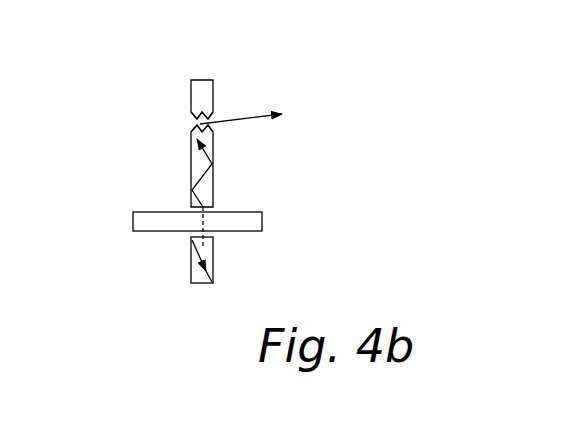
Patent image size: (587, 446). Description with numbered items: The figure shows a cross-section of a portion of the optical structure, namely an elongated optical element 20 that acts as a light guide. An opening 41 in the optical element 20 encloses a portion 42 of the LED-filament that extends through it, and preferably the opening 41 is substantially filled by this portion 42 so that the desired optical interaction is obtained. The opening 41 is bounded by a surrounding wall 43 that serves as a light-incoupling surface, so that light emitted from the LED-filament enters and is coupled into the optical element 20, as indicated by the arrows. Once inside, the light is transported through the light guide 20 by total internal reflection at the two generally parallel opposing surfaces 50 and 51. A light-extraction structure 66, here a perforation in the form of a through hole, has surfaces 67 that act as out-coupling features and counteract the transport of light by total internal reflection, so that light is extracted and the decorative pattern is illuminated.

The optical element 20 is at (214, 180).
The opening 41 is at (190, 238).
The portion of the LED-filament 42 is at (253, 221).
The surrounding wall 43 is at (203, 212).
The opposing surface 50 is at (190, 166).
The opposing surface 51 is at (214, 155).
The light-extraction structure 66 is at (214, 119).
The surface 67 is at (191, 118).